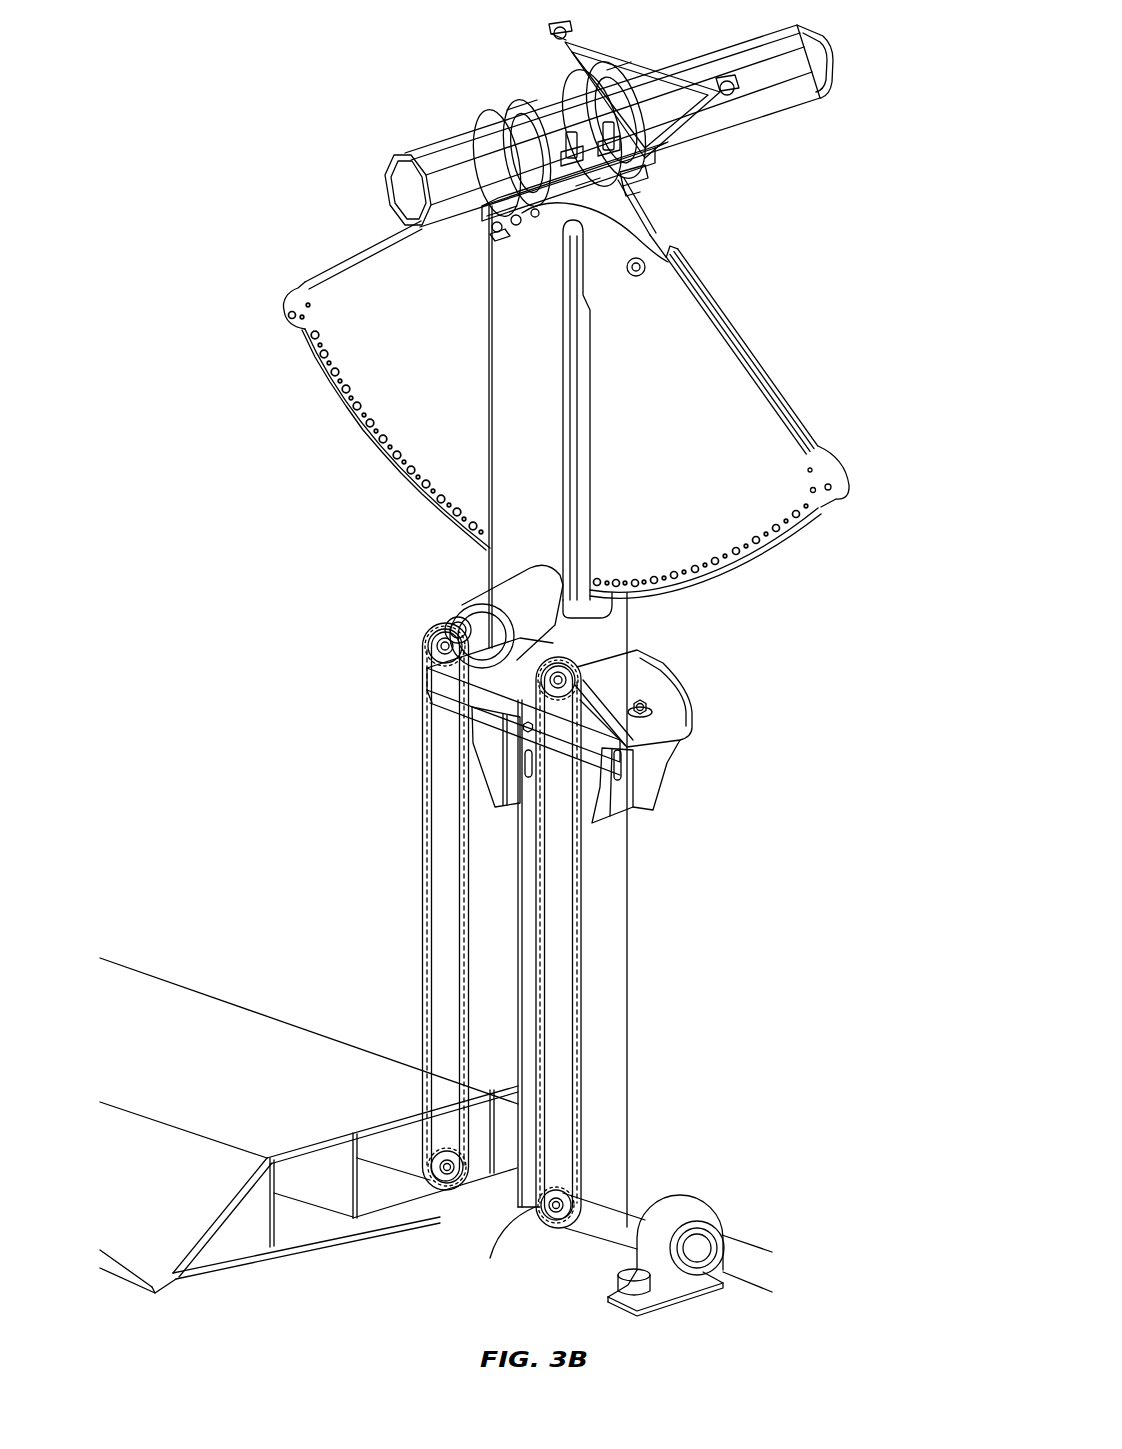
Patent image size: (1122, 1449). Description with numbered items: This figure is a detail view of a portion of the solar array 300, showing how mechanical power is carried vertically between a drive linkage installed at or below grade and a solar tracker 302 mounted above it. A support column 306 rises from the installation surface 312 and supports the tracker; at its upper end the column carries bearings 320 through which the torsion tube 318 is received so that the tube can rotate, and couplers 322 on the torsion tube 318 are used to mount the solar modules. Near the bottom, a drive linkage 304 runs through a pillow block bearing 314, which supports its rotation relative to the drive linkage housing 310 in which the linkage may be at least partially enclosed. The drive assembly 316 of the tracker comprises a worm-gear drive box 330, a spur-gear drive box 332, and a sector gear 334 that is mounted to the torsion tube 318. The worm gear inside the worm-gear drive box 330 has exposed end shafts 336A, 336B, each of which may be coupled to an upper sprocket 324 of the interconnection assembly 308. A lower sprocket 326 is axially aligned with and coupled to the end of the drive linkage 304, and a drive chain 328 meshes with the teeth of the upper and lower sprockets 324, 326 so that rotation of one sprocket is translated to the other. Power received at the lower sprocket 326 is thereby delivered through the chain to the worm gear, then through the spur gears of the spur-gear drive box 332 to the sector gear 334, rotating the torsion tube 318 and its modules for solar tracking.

The solar array 300 is at (268, 40).
The solar tracker 302 is at (890, 463).
The drive linkage 304 is at (397, 1157).
The support column 306 is at (517, 960).
The interconnection assembly 308 is at (753, 655).
The drive linkage housing 310 is at (243, 1079).
The installation surface 312 is at (893, 1179).
The pillow block bearing 314 is at (645, 1222).
The drive assembly 316 is at (262, 222).
The torsion tube 318 is at (428, 150).
The bearing 320 is at (555, 83).
The coupler 322 is at (605, 58).
The upper sprocket 324 is at (630, 745).
The lower sprocket 326 is at (560, 1208).
The drive chain 328 is at (535, 880).
The worm-gear drive box 330 is at (436, 690).
The spur-gear drive box 332 is at (458, 600).
The sector gear 334 is at (748, 368).
The end shaft 336A is at (432, 645).
The end shaft 336B is at (565, 676).